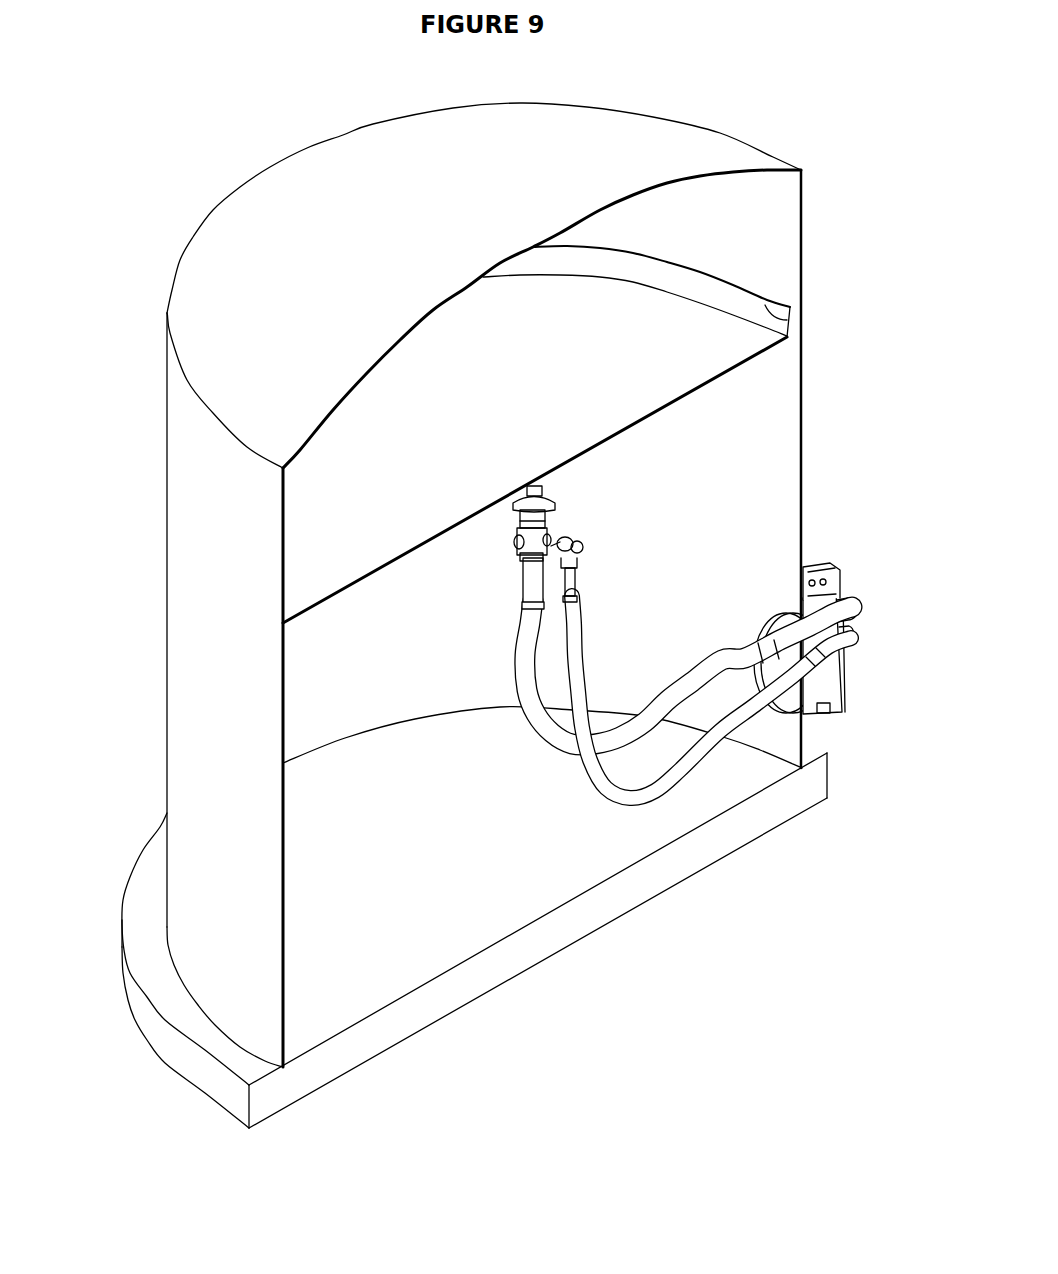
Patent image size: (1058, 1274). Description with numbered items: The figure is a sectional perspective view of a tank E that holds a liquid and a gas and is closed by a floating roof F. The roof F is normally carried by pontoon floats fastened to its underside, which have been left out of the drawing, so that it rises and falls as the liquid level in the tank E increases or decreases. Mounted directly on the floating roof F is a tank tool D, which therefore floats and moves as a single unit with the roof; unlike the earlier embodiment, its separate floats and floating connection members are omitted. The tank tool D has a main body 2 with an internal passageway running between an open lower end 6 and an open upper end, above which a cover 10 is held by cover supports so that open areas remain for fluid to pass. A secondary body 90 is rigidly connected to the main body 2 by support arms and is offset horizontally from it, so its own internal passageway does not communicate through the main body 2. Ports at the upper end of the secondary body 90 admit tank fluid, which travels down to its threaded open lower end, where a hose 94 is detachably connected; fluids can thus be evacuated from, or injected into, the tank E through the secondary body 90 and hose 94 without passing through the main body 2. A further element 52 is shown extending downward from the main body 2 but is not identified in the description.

The tank E is at (738, 88).
The floating roof F is at (368, 546).
The open lower end 6 is at (793, 321).
The cover 10 is at (555, 490).
The tank tool D is at (613, 527).
The main body 2 is at (518, 533).
The secondary body 90 is at (611, 557).
The supply hose 52 is at (520, 656).
The hose 94 is at (583, 667).